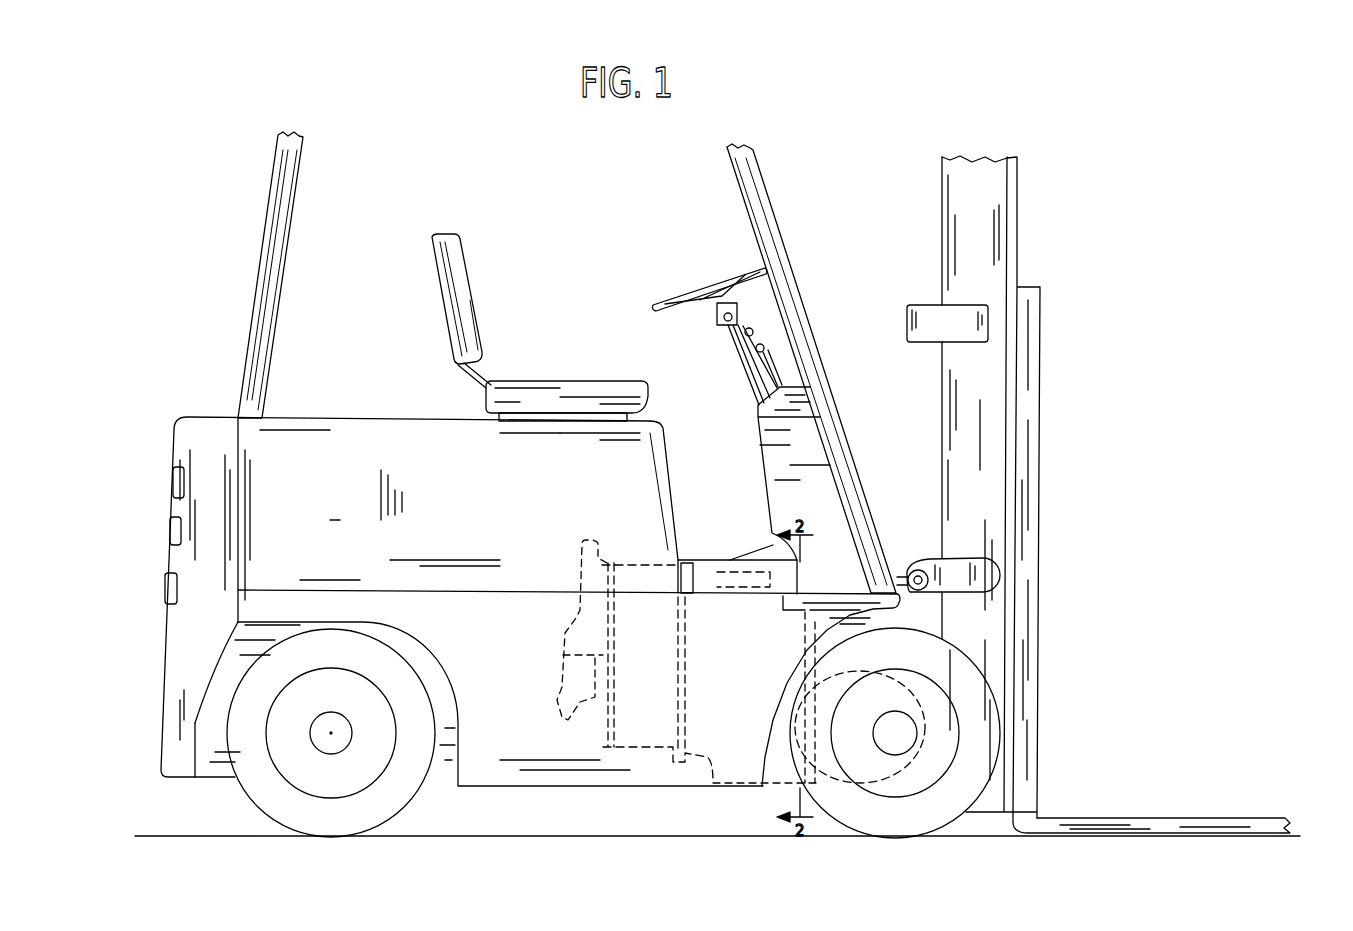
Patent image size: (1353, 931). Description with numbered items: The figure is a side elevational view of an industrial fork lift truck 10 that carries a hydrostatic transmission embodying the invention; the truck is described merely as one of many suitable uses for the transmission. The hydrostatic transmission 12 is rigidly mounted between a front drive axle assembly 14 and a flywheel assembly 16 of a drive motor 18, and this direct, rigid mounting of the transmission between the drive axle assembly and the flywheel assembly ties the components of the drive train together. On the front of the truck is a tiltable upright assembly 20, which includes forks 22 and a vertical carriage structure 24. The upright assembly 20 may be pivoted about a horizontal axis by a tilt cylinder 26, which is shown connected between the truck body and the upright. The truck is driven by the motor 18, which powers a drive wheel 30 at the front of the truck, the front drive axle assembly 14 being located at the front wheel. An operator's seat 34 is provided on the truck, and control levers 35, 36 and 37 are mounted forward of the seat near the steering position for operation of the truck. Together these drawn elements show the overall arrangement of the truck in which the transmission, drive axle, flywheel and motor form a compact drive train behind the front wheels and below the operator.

The industrial fork lift truck 10 is at (329, 430).
The hydrostatic transmission 12 is at (705, 607).
The front drive axle assembly 14 is at (883, 697).
The flywheel assembly 16 is at (632, 583).
The drive motor 18 is at (577, 623).
The tiltable upright assembly 20 is at (1125, 528).
The forks 22 is at (1080, 825).
The vertical carriage structure 24 is at (993, 233).
The tilt cylinder 26 is at (903, 572).
The drive wheel 30 is at (932, 817).
The operator's seat 34 is at (547, 393).
The control lever 35 is at (752, 331).
The control lever 36 is at (770, 360).
The control lever 37 is at (718, 320).